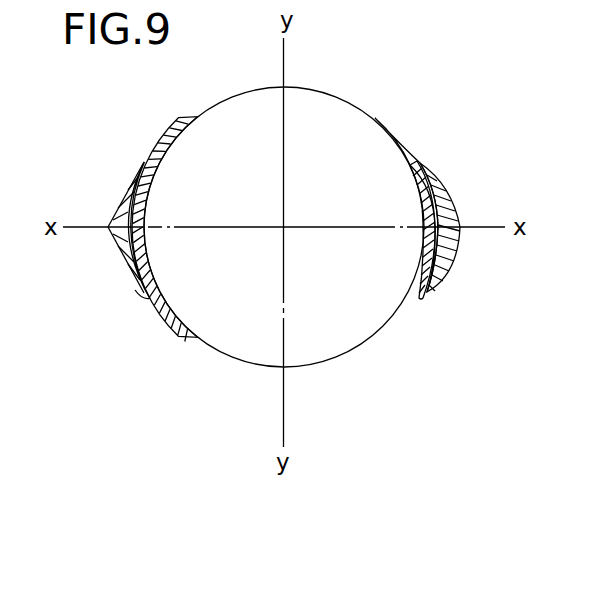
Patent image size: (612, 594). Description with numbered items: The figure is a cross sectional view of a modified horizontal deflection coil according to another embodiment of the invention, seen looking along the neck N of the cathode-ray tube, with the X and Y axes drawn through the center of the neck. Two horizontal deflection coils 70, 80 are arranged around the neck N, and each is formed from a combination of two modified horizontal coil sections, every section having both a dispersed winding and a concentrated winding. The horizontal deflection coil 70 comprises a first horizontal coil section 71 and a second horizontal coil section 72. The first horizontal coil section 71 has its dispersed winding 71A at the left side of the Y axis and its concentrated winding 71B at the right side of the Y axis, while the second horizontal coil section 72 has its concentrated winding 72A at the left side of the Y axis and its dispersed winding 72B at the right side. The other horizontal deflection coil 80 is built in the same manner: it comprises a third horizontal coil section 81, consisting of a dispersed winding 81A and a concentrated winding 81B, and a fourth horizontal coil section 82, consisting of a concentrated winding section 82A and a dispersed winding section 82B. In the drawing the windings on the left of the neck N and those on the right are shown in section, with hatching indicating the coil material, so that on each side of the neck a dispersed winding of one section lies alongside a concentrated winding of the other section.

The neck of the cathode-ray tube N is at (330, 90).
The horizontal deflection coil 70 is at (141, 218).
The first horizontal coil section 71 is at (150, 195).
The dispersed winding 71A is at (138, 170).
The concentrated winding 72A is at (118, 206).
The third horizontal coil section 81 is at (155, 281).
The dispersed winding 81A is at (147, 298).
The concentrated winding section 82A is at (125, 250).
The horizontal deflection coil 80 is at (433, 238).
The second horizontal coil section 72 is at (438, 192).
The dispersed winding 72B is at (425, 188).
The concentrated winding 71B is at (452, 196).
The fourth horizontal coil section 82 is at (422, 265).
The dispersed winding section 82B is at (450, 265).
The concentrated winding 81B is at (452, 254).